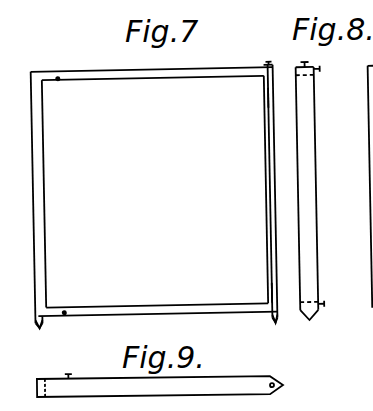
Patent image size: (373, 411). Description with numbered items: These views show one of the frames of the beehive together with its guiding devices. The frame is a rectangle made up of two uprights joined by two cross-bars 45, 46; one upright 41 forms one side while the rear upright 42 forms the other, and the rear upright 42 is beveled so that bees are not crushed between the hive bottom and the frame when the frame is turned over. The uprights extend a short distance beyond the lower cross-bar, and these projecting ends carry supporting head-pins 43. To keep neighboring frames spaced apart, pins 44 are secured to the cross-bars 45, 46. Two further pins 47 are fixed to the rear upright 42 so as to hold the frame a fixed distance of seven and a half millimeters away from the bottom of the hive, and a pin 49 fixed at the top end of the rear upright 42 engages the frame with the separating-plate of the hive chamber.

In FIG. 7, the left side bar of frame 41 is at (34, 233).
In FIG. 7, the rear upright 42 is at (270, 240).
In FIG. 7, the supporting head-pins 43 is at (38, 328).
In FIG. 7, the pins 44 is at (60, 77).
In FIG. 8, the pins 44 is at (323, 72).
In FIG. 9, the pins 44 is at (160, 377).
In FIG. 7, the cross-bar 45 is at (182, 75).
In FIG. 7, the cross-bar 46 is at (197, 310).
In FIG. 7, the pins 47 is at (275, 99).
In FIG. 7, the pin 49 is at (271, 64).
In FIG. 8, the pin 49 is at (306, 64).